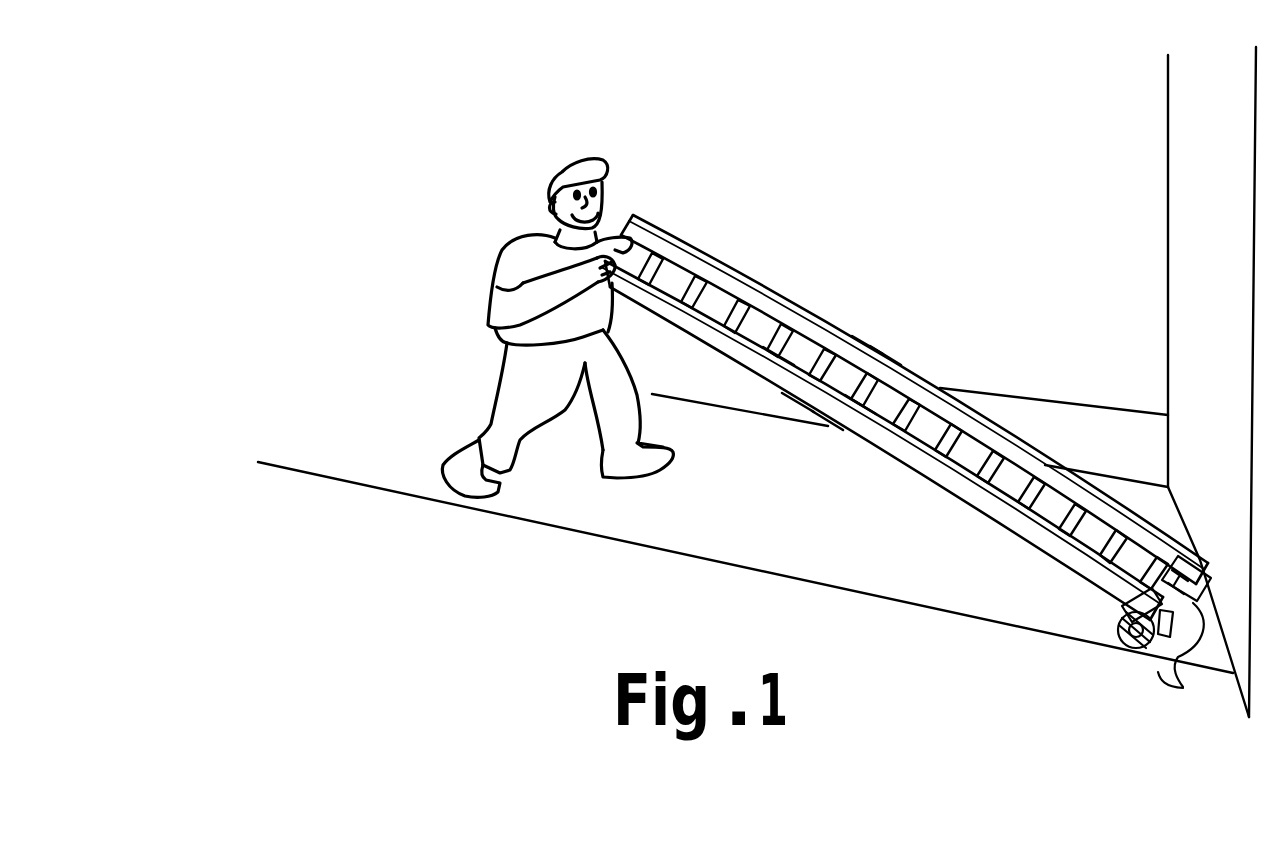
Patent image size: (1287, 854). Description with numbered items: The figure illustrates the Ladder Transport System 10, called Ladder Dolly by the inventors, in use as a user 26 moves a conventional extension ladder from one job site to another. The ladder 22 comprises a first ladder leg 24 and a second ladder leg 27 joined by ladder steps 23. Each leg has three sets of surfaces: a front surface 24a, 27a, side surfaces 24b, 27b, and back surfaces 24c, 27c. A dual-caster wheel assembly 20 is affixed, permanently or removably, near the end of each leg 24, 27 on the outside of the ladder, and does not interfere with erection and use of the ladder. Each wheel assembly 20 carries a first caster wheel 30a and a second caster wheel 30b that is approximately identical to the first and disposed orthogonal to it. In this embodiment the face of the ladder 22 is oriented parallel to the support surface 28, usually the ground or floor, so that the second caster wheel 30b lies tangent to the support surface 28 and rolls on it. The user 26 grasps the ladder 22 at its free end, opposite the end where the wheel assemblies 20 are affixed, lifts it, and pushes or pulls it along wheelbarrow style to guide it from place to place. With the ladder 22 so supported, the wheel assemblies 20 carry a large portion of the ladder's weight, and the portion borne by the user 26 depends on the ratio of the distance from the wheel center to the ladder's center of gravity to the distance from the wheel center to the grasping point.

The Ladder Transport System 10 is at (1155, 105).
The dual-caster wheel assembly 20 is at (1198, 565).
The ladder 22 is at (958, 388).
The ladder steps 23 is at (1027, 467).
The first ladder leg 24 is at (988, 503).
The front surface of leg 24a is at (800, 357).
The side surface of leg 24b is at (863, 430).
The back surface of leg 24c is at (832, 417).
The user 26 is at (497, 392).
The second ladder leg 27 is at (1110, 500).
The front surface of leg 27a is at (882, 349).
The side surface of leg 27b is at (865, 342).
The back surface of leg 27c is at (887, 395).
The support surface 28 is at (975, 622).
The first caster wheel 30a is at (1115, 615).
The second caster wheel 30b is at (1188, 674).